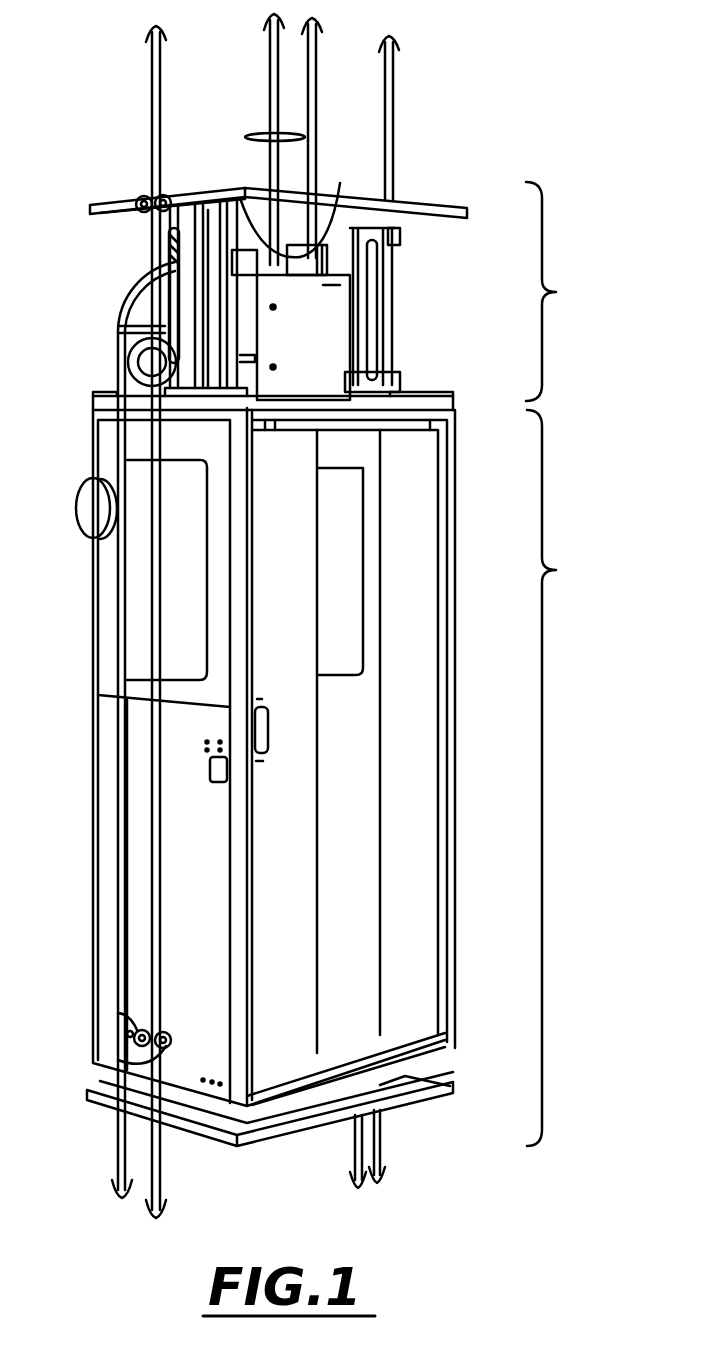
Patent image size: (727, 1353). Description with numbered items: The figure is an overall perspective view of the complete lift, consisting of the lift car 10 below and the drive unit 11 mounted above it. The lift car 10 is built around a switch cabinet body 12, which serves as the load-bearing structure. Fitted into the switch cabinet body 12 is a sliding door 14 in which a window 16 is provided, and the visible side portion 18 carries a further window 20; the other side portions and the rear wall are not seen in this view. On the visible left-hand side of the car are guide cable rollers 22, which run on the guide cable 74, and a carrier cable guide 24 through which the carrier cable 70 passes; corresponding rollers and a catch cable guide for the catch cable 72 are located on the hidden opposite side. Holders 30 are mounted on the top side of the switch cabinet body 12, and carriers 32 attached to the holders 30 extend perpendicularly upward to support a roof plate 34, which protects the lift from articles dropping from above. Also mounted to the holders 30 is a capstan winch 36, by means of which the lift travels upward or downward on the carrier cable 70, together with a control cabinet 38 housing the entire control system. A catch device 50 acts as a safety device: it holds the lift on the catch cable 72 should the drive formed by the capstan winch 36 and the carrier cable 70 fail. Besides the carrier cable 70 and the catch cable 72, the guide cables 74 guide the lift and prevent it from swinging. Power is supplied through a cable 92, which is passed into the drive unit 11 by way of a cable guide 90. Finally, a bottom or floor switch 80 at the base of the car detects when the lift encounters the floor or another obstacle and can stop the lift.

The lift car 10 is at (559, 778).
The drive unit 11 is at (558, 291).
The switch cabinet body 12 is at (237, 875).
The sliding door 14 is at (363, 824).
The window 16 is at (353, 586).
The side portion 18 is at (203, 826).
The window 20 is at (193, 589).
The guide cable rollers 22 is at (143, 196).
The carrier cable guide 24 is at (118, 1012).
The holders 30 is at (108, 398).
The carriers 32 is at (190, 302).
The roof plate 34 is at (430, 207).
The capstan winch 36 is at (262, 258).
The control cabinet 38 is at (312, 356).
The catch device 50 is at (328, 245).
The carrier cable 70 is at (273, 32).
The catch cable 72 is at (317, 38).
The guide cables 74 is at (152, 62).
The bottom or floor switch 80 is at (355, 1125).
The cable guide 90 is at (138, 275).
The cable 92 is at (118, 650).